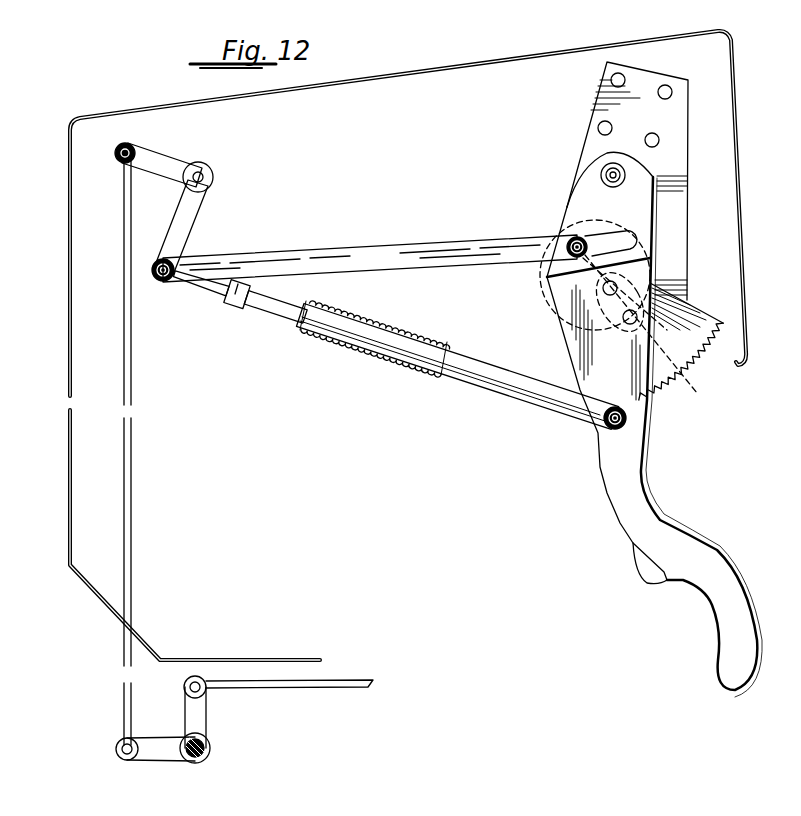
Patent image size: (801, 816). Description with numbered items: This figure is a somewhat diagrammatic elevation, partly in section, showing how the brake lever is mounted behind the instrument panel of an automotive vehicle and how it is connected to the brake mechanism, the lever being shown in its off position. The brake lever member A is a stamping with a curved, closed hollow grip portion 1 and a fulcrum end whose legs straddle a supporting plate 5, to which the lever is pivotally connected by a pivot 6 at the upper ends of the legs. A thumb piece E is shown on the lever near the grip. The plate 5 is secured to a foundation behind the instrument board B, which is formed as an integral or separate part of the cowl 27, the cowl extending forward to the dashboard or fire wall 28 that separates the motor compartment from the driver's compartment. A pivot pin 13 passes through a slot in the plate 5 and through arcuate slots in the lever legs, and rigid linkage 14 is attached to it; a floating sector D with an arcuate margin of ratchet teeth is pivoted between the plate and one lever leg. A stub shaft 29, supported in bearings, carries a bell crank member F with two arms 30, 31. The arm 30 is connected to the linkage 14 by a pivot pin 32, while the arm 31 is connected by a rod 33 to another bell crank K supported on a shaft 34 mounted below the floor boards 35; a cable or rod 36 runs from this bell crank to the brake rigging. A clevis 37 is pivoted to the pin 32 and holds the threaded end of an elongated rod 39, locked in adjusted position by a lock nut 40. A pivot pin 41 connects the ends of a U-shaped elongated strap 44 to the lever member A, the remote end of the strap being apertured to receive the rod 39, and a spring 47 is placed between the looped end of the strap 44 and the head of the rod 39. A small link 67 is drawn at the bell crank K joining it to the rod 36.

The grip portion 1 is at (730, 625).
The supporting plate 5 is at (682, 155).
The pivot 6 is at (605, 168).
The pivot pin 13 is at (572, 242).
The rigid linkage 14 is at (434, 232).
The cowl 27 is at (438, 76).
The dashboard or fire wall 28 is at (70, 270).
The stub shaft 29 is at (212, 175).
The arm or crank 30 is at (194, 226).
The arm 31 is at (176, 145).
The pivot pin 32 is at (158, 280).
The rod 33 is at (133, 497).
The shaft 34 is at (212, 753).
The floor boards 35 is at (240, 658).
The cable or rod 36 is at (322, 692).
The clevis 37 is at (192, 298).
The elongated rod 39 is at (268, 316).
The lock nut 40 is at (232, 305).
The pivot pin 41 is at (600, 432).
The U-shaped elongated strap 44 is at (478, 396).
The spring 47 is at (434, 320).
The link 67 is at (203, 722).
The brake lever member A is at (637, 483).
The instrument panel B is at (742, 193).
The floating sector D is at (696, 322).
The thumb piece E is at (630, 552).
The bell crank member F is at (207, 164).
The bell crank K is at (186, 735).